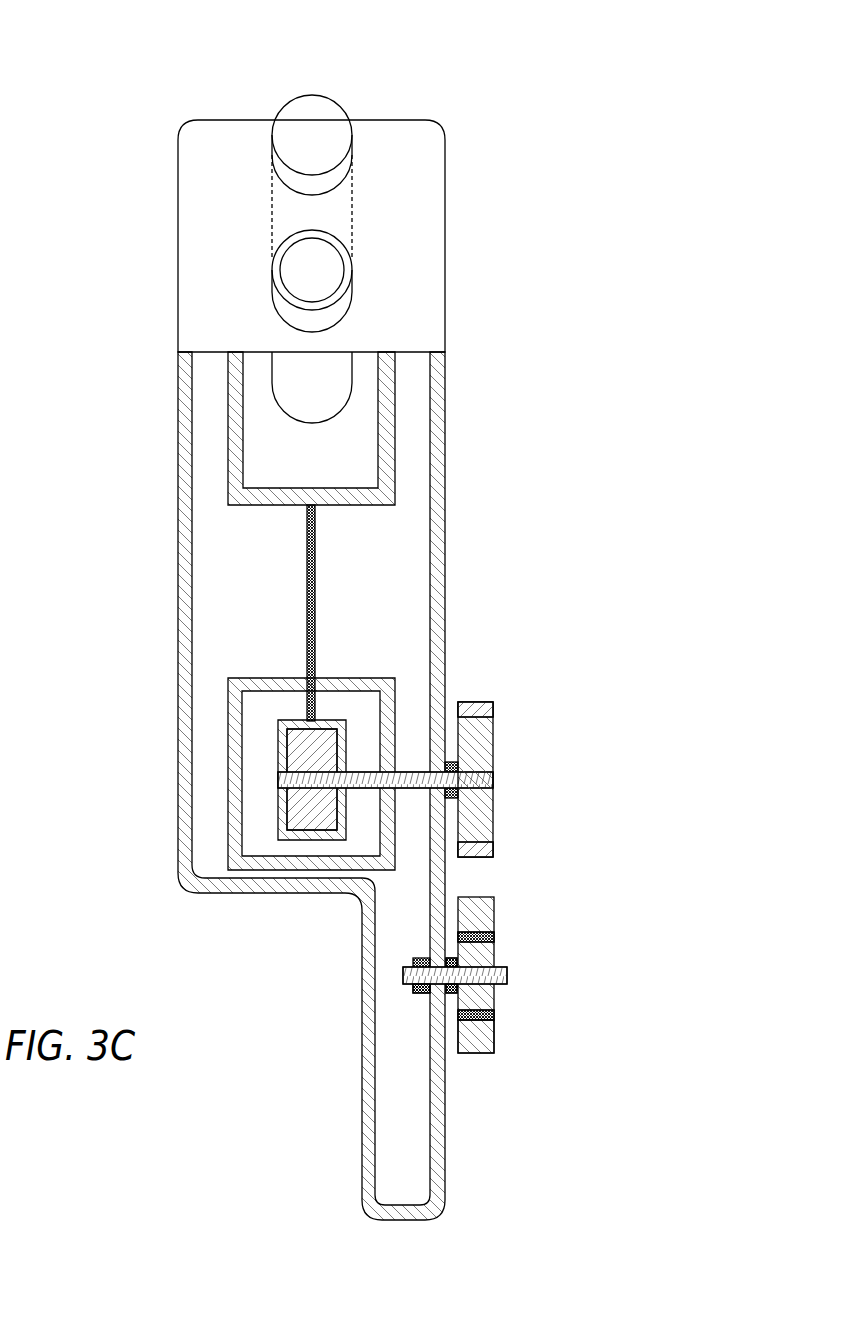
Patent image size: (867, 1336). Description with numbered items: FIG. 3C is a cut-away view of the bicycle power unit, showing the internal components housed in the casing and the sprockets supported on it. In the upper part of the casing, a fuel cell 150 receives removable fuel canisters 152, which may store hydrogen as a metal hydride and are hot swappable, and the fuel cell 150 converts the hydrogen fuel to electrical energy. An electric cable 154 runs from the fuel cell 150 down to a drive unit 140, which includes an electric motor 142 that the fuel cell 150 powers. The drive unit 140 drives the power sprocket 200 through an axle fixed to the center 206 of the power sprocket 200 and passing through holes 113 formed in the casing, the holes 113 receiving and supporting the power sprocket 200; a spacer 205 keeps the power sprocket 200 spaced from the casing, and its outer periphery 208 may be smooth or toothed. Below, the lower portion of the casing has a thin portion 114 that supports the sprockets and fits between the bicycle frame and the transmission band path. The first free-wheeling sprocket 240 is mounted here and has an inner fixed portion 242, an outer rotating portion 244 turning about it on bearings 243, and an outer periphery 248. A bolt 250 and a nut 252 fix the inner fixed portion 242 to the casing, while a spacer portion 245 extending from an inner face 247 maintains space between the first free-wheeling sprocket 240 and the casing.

The holes 113 is at (437, 762).
The thin portion 114 is at (365, 1143).
The drive unit 140 is at (258, 738).
The electric motor 142 is at (298, 818).
The fuel cell 150 is at (257, 438).
The fuel canisters 152 is at (310, 277).
The electric cable 154 is at (307, 580).
The power sprocket 200 is at (516, 751).
The spacer 205 is at (448, 795).
The center 206 is at (493, 778).
The outer periphery 208 is at (483, 702).
The first free-wheeling sprocket 240 is at (452, 1034).
The inner fixed portion 242 is at (519, 1016).
The bearings 243 is at (495, 933).
The outer rotating portion 244 is at (495, 1035).
The spacer portion 245 is at (447, 995).
The inner face 247 is at (457, 953).
The outer periphery 248 is at (483, 1054).
The bolt 250 is at (403, 975).
The nut 252 is at (420, 993).